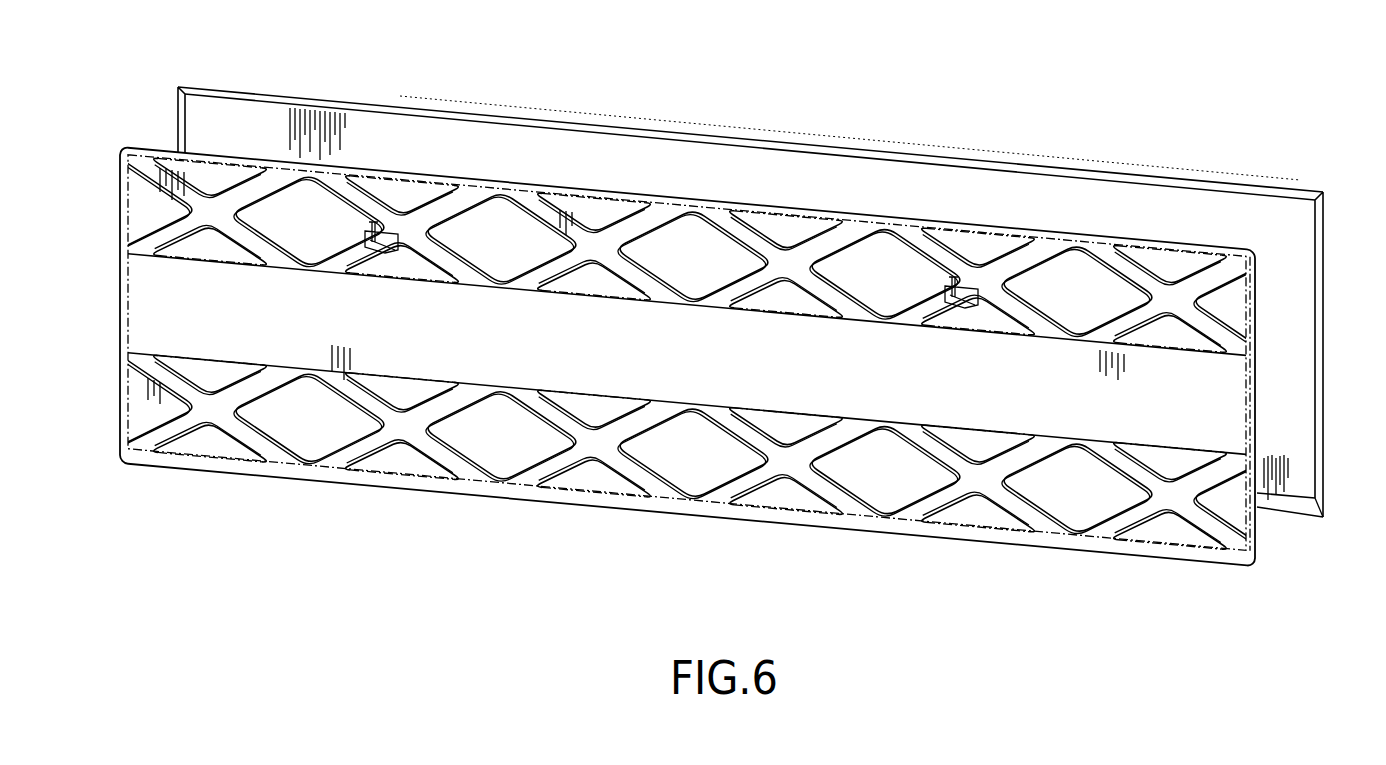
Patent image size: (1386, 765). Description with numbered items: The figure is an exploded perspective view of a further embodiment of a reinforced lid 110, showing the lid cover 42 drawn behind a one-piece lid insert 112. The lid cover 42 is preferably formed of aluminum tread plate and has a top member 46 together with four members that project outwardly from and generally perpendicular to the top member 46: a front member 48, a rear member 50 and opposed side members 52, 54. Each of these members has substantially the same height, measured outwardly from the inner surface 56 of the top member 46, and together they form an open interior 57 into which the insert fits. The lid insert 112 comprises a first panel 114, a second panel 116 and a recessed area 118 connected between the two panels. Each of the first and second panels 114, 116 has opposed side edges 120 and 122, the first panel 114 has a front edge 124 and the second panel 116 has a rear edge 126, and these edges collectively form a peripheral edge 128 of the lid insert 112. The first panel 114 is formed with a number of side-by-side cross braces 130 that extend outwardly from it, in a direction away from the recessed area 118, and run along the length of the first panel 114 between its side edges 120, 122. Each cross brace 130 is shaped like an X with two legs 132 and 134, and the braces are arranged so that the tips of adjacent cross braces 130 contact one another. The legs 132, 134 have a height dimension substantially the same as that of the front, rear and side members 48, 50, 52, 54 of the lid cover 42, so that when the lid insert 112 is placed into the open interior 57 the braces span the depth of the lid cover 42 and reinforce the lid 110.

The lid cover 42 is at (747, 319).
The top member 46 is at (1323, 392).
The front member 48 is at (722, 142).
The rear member 50 is at (1300, 511).
The side member 52 is at (177, 107).
The side member 54 is at (1320, 475).
The inner surface 56 is at (1147, 205).
The open interior 57 is at (1058, 193).
The lid 110 is at (1240, 125).
The lid insert 112 is at (707, 384).
The first panel 114 is at (121, 188).
The second panel 116 is at (132, 400).
The recessed area 118 is at (152, 300).
The side edge 120 is at (125, 286).
The side edge 122 is at (1262, 300).
The front edge 124 is at (476, 176).
The rear edge 126 is at (710, 516).
The peripheral edge 128 is at (260, 498).
The cross brace 130 is at (797, 230).
The leg 132 is at (568, 207).
The leg 134 is at (628, 209).